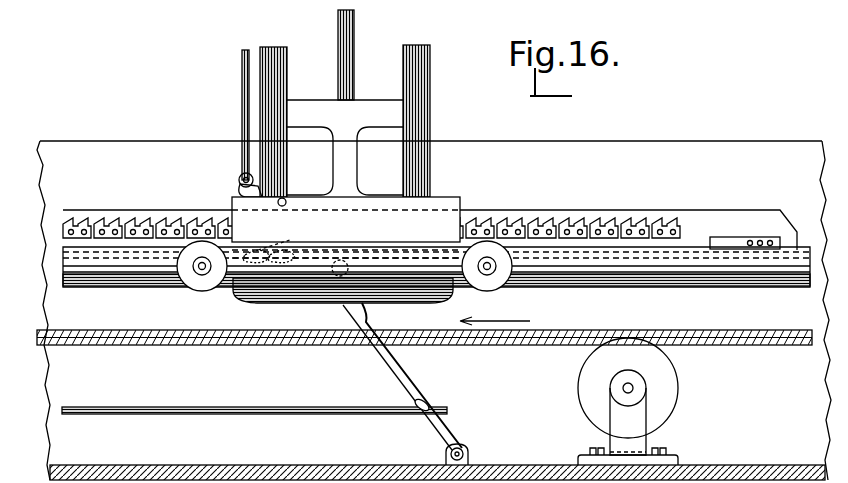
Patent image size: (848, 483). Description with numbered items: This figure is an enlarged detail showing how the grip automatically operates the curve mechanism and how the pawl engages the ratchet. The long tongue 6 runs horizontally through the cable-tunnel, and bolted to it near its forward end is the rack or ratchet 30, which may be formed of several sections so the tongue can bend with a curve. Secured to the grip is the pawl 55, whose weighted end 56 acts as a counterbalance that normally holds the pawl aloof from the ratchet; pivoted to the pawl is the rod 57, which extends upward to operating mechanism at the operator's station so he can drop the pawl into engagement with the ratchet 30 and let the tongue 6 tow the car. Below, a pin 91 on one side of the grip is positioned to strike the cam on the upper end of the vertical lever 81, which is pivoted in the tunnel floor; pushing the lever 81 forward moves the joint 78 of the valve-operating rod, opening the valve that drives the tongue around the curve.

The rod 57 is at (242, 101).
The weighted end 56 is at (240, 184).
The pawl 55 is at (286, 197).
The pin 91 is at (348, 270).
The rack or ratchet 30 is at (675, 218).
The tongue 6 is at (765, 215).
The vertical lever 81 is at (405, 384).
The joint 78 is at (276, 414).